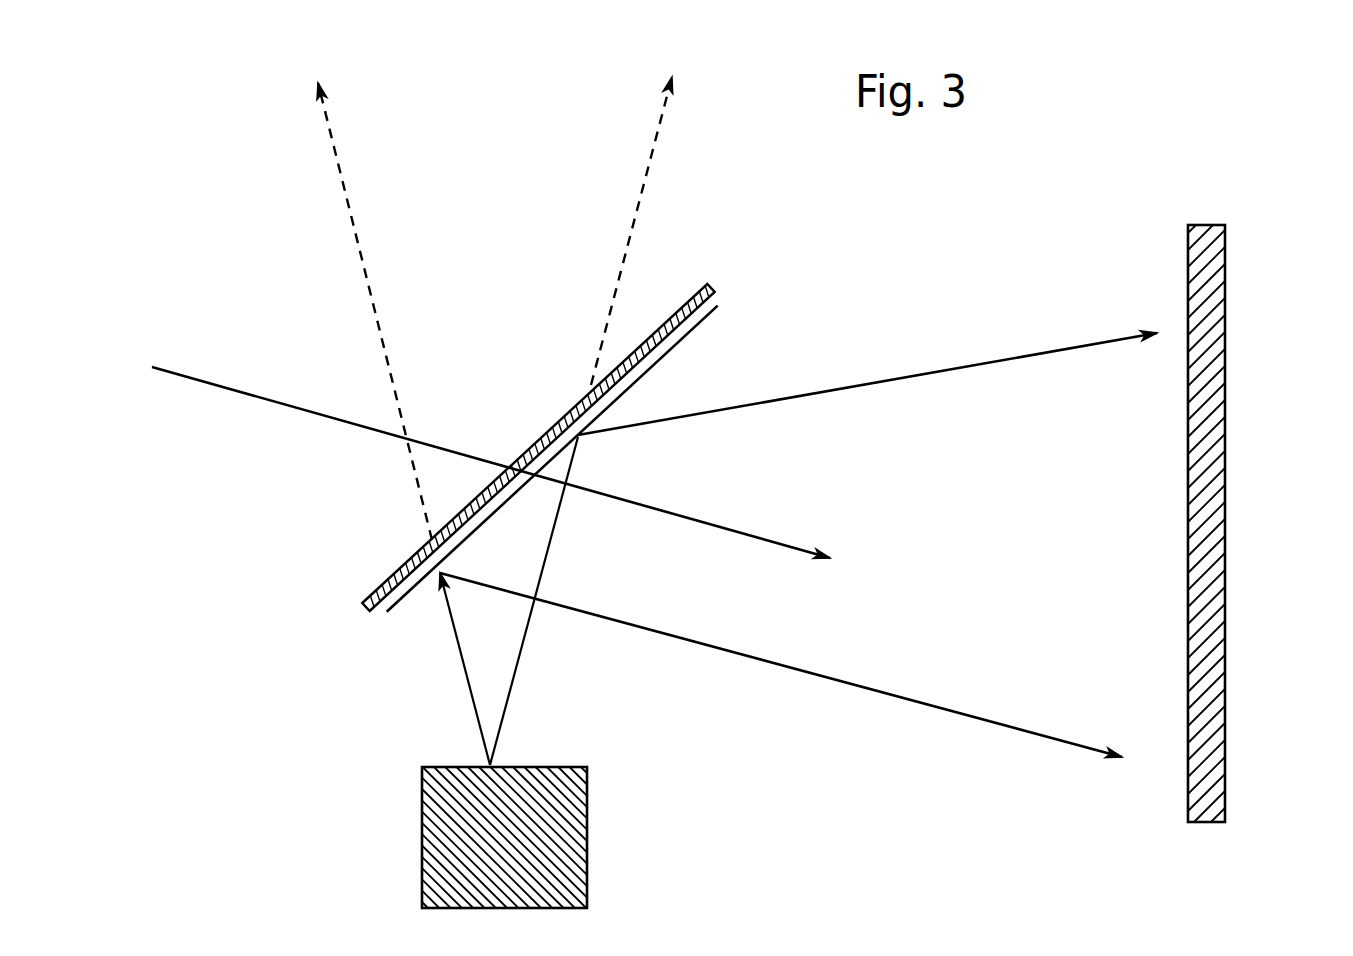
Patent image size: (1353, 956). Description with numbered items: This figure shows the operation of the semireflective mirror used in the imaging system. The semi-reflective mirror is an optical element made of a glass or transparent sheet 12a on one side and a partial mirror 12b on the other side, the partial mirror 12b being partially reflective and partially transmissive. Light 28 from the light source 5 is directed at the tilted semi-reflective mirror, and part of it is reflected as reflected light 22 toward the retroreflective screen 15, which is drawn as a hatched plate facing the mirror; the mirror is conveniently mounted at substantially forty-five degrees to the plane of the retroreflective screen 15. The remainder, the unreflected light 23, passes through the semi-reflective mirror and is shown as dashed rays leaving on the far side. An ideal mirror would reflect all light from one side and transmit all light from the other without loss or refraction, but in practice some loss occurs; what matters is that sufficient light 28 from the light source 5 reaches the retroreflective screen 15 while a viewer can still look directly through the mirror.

The light source 5 is at (250, 392).
The glass or transparent sheet 12a is at (370, 593).
The partial mirror 12b is at (393, 614).
The retroreflective screen 15 is at (1225, 567).
The reflected light 22 is at (1010, 360).
The unreflected light 23 is at (352, 213).
The light from the light source 28 is at (468, 685).